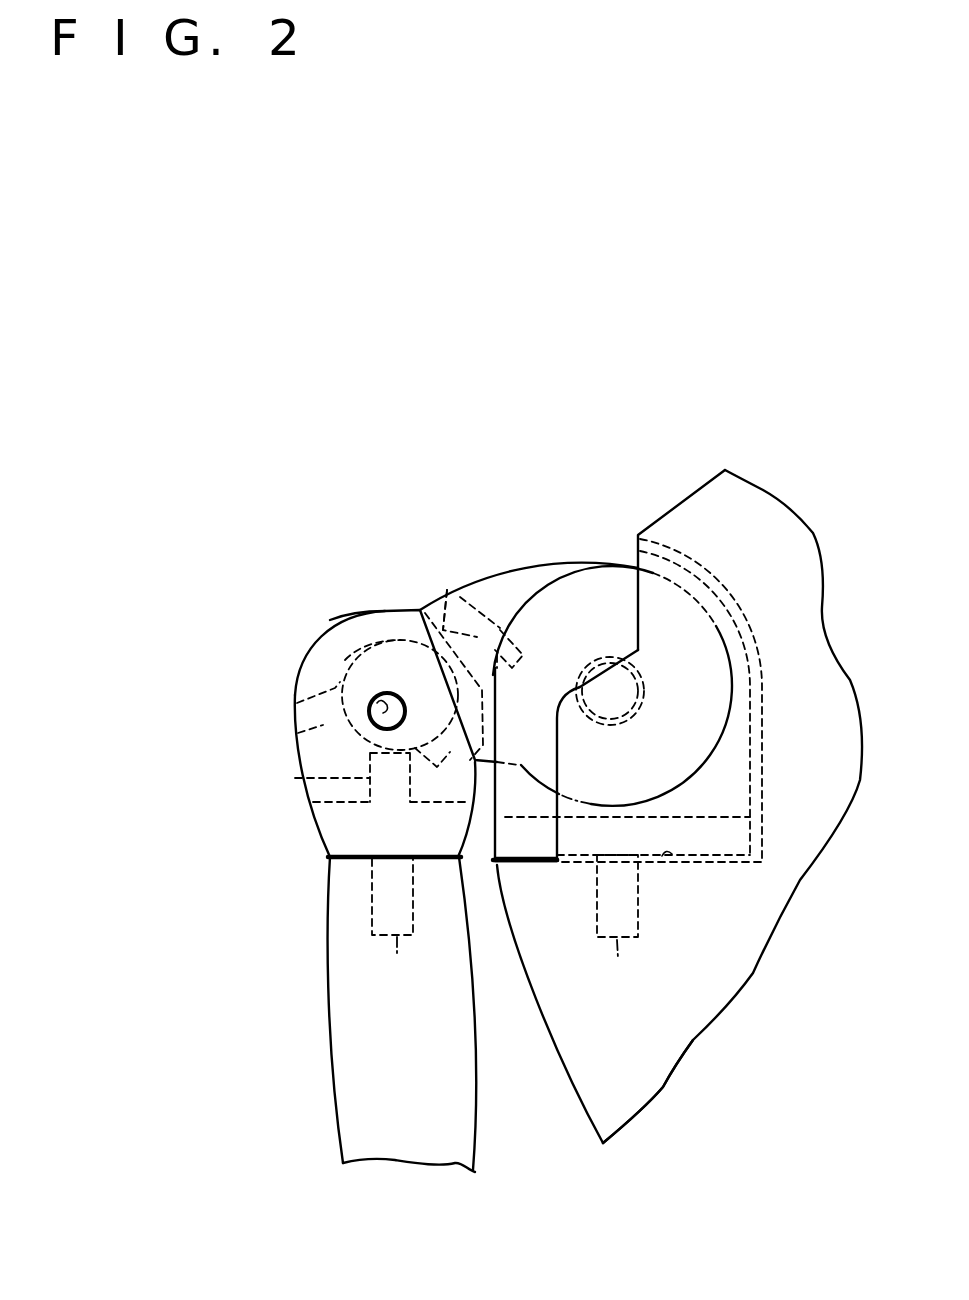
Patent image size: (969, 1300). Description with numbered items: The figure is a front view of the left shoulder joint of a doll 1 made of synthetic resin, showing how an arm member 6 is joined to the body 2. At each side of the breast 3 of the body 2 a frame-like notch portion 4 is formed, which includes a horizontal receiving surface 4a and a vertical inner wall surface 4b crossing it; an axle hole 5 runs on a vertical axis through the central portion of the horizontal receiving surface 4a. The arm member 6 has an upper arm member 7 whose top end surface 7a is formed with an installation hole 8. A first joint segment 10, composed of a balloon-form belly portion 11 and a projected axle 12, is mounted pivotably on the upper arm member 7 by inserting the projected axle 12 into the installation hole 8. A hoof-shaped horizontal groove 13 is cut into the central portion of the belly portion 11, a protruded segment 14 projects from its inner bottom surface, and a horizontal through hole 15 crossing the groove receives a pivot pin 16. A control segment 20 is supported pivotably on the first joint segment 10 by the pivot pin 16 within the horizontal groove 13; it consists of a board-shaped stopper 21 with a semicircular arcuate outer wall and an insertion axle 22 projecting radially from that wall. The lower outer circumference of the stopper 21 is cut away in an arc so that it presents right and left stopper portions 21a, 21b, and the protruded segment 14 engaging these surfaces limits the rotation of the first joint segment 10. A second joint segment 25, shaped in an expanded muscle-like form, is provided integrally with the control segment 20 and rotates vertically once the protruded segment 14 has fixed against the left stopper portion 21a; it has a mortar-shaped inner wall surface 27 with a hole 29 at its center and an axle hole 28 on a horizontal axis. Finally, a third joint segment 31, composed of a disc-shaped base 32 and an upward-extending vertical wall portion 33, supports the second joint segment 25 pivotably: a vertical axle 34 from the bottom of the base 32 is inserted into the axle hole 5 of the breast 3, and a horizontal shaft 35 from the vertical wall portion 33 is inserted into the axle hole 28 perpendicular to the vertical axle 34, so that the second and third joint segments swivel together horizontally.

The doll 1 is at (430, 329).
The body 2 is at (706, 1018).
The breast 3 is at (780, 928).
The notch portion 4 is at (727, 597).
The horizontal receiving surface 4a is at (683, 862).
The vertical inner wall surface 4b is at (752, 757).
The axle hole 5 is at (590, 918).
The arm member 6 is at (324, 1077).
The upper arm member 7 is at (330, 947).
The top end surface 7a is at (344, 856).
The installation hole 8 is at (415, 895).
The first joint segment 10 is at (338, 612).
The belly portion 11 is at (372, 628).
The projected axle 12 is at (398, 966).
The horizontal groove 13 is at (295, 736).
The protruded segment 14 is at (300, 778).
The horizontal through hole 15 is at (383, 695).
The pivot pin 16 is at (398, 717).
The control segment 20 is at (338, 658).
The stopper 21 is at (480, 740).
The left stopper portion 21a is at (295, 700).
The right stopper portion 21b is at (418, 800).
The insertion axle 22 is at (479, 636).
The second joint segment 25 is at (555, 562).
The inner wall surface 27 is at (447, 607).
The axle hole 28 is at (617, 712).
The hole 29 is at (497, 663).
The third joint segment 31 is at (602, 580).
The base 32 is at (516, 862).
The vertical wall portion 33 is at (623, 613).
The vertical axle 34 is at (640, 964).
The horizontal shaft 35 is at (640, 674).